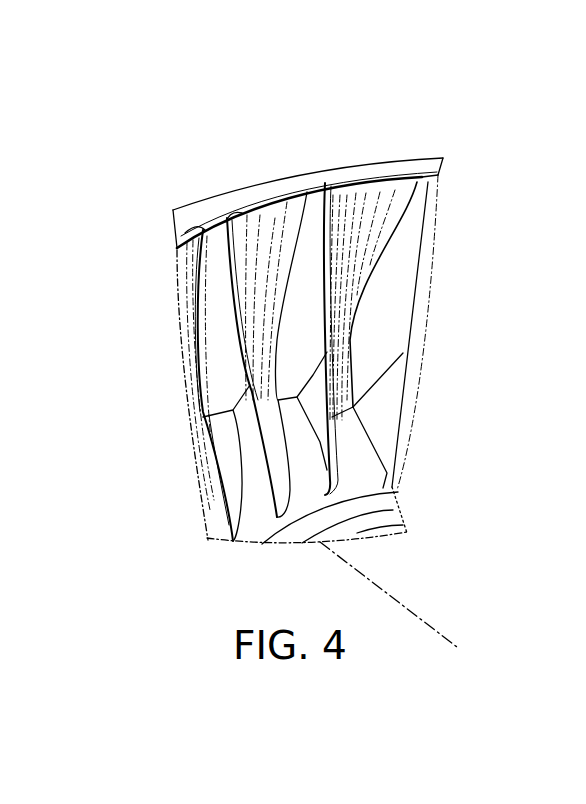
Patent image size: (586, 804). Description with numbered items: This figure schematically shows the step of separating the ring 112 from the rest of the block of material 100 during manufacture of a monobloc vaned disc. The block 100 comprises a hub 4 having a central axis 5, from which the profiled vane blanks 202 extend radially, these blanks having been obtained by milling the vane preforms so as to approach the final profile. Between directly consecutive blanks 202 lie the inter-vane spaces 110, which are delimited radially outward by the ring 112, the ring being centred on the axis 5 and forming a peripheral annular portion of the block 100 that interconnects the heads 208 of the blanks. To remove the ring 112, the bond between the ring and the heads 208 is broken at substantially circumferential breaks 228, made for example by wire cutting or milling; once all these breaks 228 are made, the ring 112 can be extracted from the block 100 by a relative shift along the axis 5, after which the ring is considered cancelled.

The block of material 100 is at (203, 108).
The ring 112 is at (440, 162).
The circumferential breaks 228 is at (357, 181).
The heads of the blanks 208 is at (252, 220).
The profiled vane blank 202 is at (370, 220).
The inter-vane spaces 110 is at (297, 333).
The hub 4 is at (397, 515).
The central axis 5 is at (440, 630).